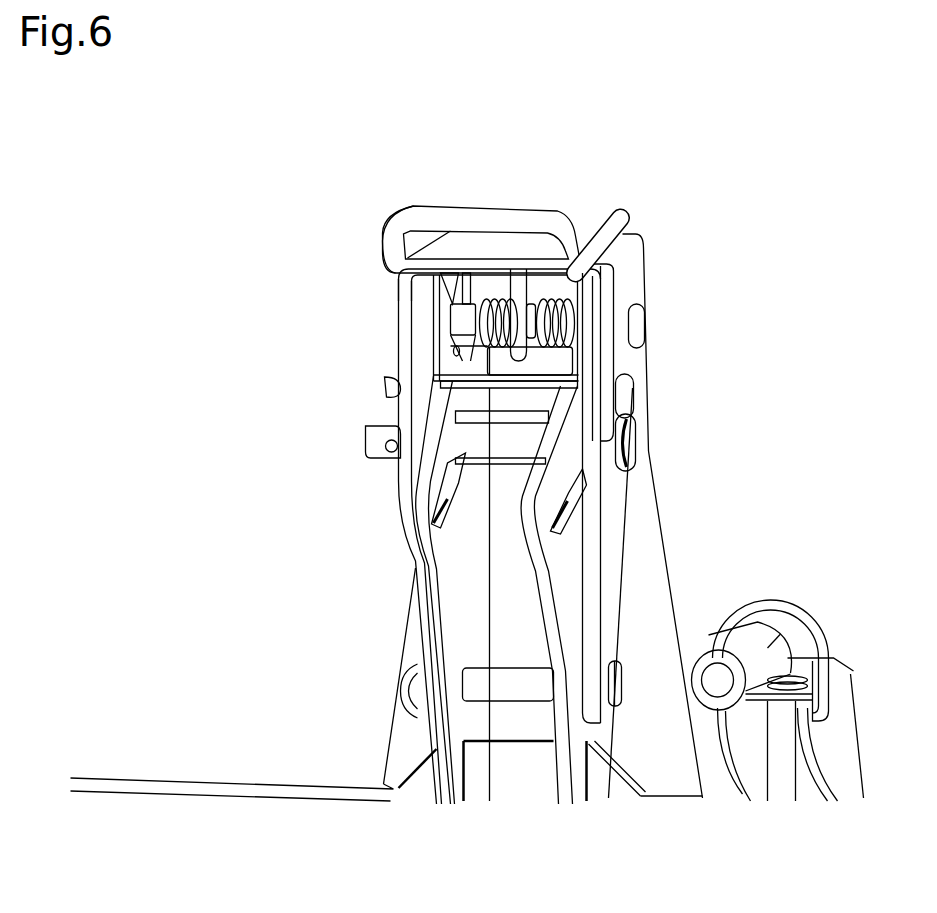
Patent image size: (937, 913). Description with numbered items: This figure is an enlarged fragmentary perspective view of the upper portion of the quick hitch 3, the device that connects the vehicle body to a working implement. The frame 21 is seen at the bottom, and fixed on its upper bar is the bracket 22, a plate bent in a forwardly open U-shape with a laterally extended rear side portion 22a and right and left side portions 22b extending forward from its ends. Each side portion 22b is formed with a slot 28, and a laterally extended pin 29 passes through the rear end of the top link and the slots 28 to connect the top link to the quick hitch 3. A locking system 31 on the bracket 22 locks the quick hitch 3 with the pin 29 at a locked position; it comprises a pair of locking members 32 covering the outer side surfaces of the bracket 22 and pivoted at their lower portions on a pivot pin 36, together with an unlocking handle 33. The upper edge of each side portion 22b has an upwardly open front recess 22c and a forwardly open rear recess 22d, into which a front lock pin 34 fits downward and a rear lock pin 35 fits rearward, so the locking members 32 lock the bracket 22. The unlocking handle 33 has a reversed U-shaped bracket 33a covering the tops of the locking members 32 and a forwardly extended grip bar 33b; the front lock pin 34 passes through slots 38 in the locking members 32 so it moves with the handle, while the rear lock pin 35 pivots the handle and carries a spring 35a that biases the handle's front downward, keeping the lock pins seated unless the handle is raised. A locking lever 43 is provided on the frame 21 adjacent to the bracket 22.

The quick hitch 3 is at (813, 228).
The frame 21 is at (130, 790).
The bracket 22 is at (402, 570).
The rear side portion 22a is at (535, 632).
The side portions 22b is at (475, 565).
The front recess 22c is at (393, 407).
The rear recess 22d is at (438, 360).
The slot 28 is at (430, 483).
The pin 29 is at (636, 437).
The locking system 31 is at (445, 117).
The locking member 32 is at (423, 377).
The unlocking handle 33 is at (455, 187).
The bracket 33a is at (577, 232).
The grip bar 33b is at (392, 225).
The front lock pin 34 is at (634, 383).
The rear lock pin 35 is at (457, 313).
The spring 35a is at (565, 312).
The pivot pin 36 is at (522, 690).
The slot 38 is at (437, 323).
The locking lever 43 is at (755, 598).